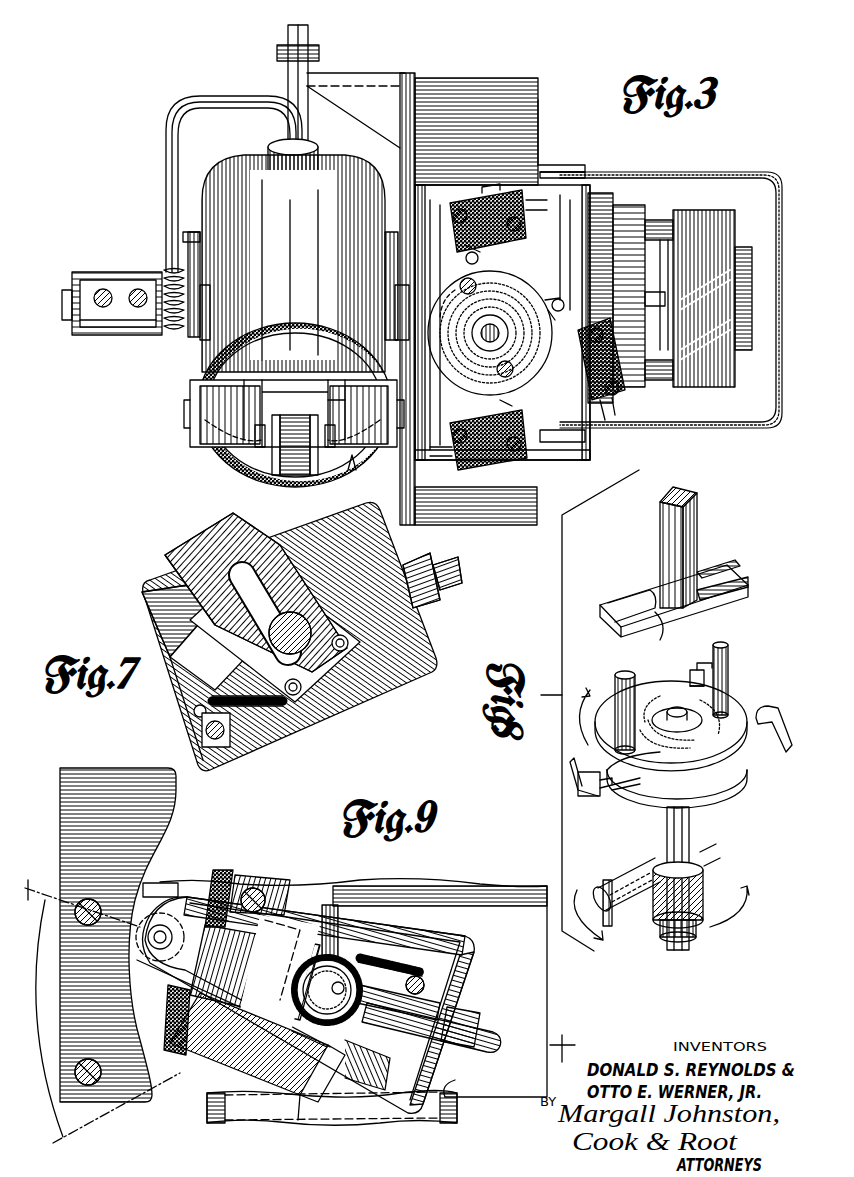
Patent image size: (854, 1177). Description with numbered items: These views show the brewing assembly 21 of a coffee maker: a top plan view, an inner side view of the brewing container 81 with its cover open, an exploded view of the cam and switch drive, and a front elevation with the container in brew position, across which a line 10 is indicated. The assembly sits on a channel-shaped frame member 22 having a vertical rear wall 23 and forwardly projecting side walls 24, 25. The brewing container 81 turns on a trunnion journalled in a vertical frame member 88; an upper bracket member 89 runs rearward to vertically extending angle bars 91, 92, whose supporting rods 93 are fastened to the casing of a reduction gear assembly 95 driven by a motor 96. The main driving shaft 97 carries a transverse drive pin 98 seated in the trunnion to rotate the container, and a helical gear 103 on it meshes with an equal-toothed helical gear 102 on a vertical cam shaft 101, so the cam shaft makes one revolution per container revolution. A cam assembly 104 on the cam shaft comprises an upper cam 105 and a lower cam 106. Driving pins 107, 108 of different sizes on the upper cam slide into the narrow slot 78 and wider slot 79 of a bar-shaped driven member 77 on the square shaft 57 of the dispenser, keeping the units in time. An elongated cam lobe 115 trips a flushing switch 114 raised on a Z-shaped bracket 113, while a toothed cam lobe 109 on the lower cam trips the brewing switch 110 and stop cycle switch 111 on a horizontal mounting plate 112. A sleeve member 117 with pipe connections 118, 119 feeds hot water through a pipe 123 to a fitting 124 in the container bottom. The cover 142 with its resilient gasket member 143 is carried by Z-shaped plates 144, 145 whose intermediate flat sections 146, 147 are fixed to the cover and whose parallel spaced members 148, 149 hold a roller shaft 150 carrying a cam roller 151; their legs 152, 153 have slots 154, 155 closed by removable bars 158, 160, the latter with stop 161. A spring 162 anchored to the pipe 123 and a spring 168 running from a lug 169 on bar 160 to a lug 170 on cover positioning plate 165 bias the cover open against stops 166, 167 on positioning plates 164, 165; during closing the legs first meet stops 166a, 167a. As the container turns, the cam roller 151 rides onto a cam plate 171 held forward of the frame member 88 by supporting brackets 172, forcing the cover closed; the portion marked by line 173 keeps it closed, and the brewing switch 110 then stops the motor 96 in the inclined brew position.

In FIG. 9, the axis line 10 is at (302, 1000).
In FIG. 3, the brewing assembly 21 is at (149, 193).
In FIG. 9, the brewing assembly 21 is at (459, 863).
In FIG. 3, the channel-shaped frame member 22 is at (772, 428).
In FIG. 9, the channel-shaped frame member 22 is at (232, 1126).
In FIG. 3, the vertical rear wall 23 is at (785, 192).
In FIG. 9, the vertical rear wall 23 is at (370, 1115).
In FIG. 3, the side wall 24 is at (675, 172).
In FIG. 9, the side wall 24 is at (210, 1115).
In FIG. 3, the side wall 25 is at (688, 425).
In FIG. 9, the side wall 25 is at (450, 1118).
In FIG. 7, the shaft 57 is at (276, 612).
In FIG. 8, the shaft 57 is at (695, 530).
In FIG. 8, the driven member 77 is at (667, 633).
In FIG. 8, the slot 78 is at (735, 585).
In FIG. 8, the slot 79 is at (603, 620).
In FIG. 7, the brewing container 81 is at (400, 700).
In FIG. 9, the brewing container 81 is at (450, 924).
In FIG. 3, the vertical frame member 88 is at (405, 483).
In FIG. 9, the vertical frame member 88 is at (505, 886).
In FIG. 3, the upper bracket member 89 is at (495, 88).
In FIG. 3, the angle bar 91 is at (548, 126).
In FIG. 3, the angle bar 92 is at (538, 465).
In FIG. 3, the upper supporting rod 93 is at (560, 160).
In FIG. 3, the reduction gear assembly 95 is at (632, 205).
In FIG. 3, the motor 96 is at (725, 212).
In FIG. 8, the main driving shaft 97 is at (715, 858).
In FIG. 8, the drive pin 98 is at (608, 880).
In FIG. 3, the cam shaft 101 is at (492, 330).
In FIG. 8, the cam shaft 101 is at (698, 834).
In FIG. 8, the helical gear 102 is at (700, 890).
In FIG. 8, the helical gear 103 is at (650, 895).
In FIG. 3, the cam assembly 104 is at (540, 270).
In FIG. 8, the cam assembly 104 is at (760, 778).
In FIG. 3, the upper cam 105 is at (465, 380).
In FIG. 8, the upper cam 105 is at (730, 702).
In FIG. 8, the lower cam 106 is at (740, 785).
In FIG. 3, the driving pin 107 is at (508, 350).
In FIG. 8, the driving pin 107 is at (730, 662).
In FIG. 3, the driving pin 108 is at (469, 293).
In FIG. 8, the driving pin 108 is at (620, 676).
In FIG. 3, the cam lobe 109 is at (498, 262).
In FIG. 8, the cam lobe 109 is at (622, 792).
In FIG. 3, the brewing switch 110 is at (515, 458).
In FIG. 8, the brewing switch 110 is at (772, 708).
In FIG. 3, the stop cycle switch 111 is at (504, 204).
In FIG. 8, the stop cycle switch 111 is at (586, 798).
In FIG. 3, the mounting plate 112 is at (448, 190).
In FIG. 3, the Z-shaped bracket 113 is at (550, 306).
In FIG. 3, the flushing switch 114 is at (590, 355).
In FIG. 8, the flushing switch 114 is at (690, 676).
In FIG. 3, the elongated cam lobe 115 is at (545, 292).
In FIG. 8, the elongated cam lobe 115 is at (602, 778).
In FIG. 3, the sleeve member 117 is at (120, 330).
In FIG. 3, the pipe connection 118 is at (98, 283).
In FIG. 9, the pipe connection 118 is at (330, 905).
In FIG. 3, the pipe connection 119 is at (138, 283).
In FIG. 3, the pipe 123 is at (218, 98).
In FIG. 7, the pipe 123 is at (460, 580).
In FIG. 9, the pipe 123 is at (498, 1036).
In FIG. 3, the fitting 124 is at (272, 148).
In FIG. 7, the fitting 124 is at (432, 566).
In FIG. 9, the fitting 124 is at (490, 1013).
In FIG. 3, the cover 142 is at (286, 326).
In FIG. 9, the cover 142 is at (175, 1020).
In FIG. 3, the resilient gasket member 143 is at (320, 330).
In FIG. 9, the resilient gasket member 143 is at (228, 845).
In FIG. 3, the Z-shaped plate 144 is at (181, 427).
In FIG. 9, the Z-shaped plate 144 is at (298, 890).
In FIG. 3, the Z-shaped plate 145 is at (352, 470).
In FIG. 3, the intermediate flat section 146 is at (244, 380).
In FIG. 3, the intermediate flat section 147 is at (345, 382).
In FIG. 3, the parallel spaced member 148 is at (285, 470).
In FIG. 9, the parallel spaced member 148 is at (190, 894).
In FIG. 3, the parallel spaced member 149 is at (328, 403).
In FIG. 3, the roller shaft 150 is at (262, 447).
In FIG. 9, the roller shaft 150 is at (165, 960).
In FIG. 3, the cam roller 151 is at (296, 415).
In FIG. 9, the cam roller 151 is at (138, 937).
In FIG. 3, the leg 152 is at (195, 262).
In FIG. 9, the leg 152 is at (262, 930).
In FIG. 3, the leg 153 is at (388, 262).
In FIG. 7, the leg 153 is at (336, 606).
In FIG. 9, the slot 154 is at (406, 964).
In FIG. 7, the slot 155 is at (305, 592).
In FIG. 3, the removable bar 158 is at (188, 236).
In FIG. 9, the removable bar 158 is at (418, 1002).
In FIG. 7, the removable bar 160 is at (350, 650).
In FIG. 7, the stop 161 is at (334, 617).
In FIG. 3, the spring 162 is at (175, 333).
In FIG. 9, the spring 162 is at (385, 955).
In FIG. 9, the cover positioning plate 164 is at (280, 1060).
In FIG. 7, the cover positioning plate 165 is at (182, 638).
In FIG. 3, the stop 166 is at (192, 293).
In FIG. 9, the stop 166 is at (300, 1110).
In FIG. 9, the stop 166a is at (256, 872).
In FIG. 3, the stop 167 is at (386, 295).
In FIG. 7, the stop 167 is at (279, 545).
In FIG. 7, the stop 167a is at (204, 732).
In FIG. 7, the spring 168 is at (262, 710).
In FIG. 7, the lug 169 is at (296, 720).
In FIG. 7, the lug 170 is at (194, 712).
In FIG. 3, the cam plate 171 is at (287, 32).
In FIG. 9, the cam plate 171 is at (76, 770).
In FIG. 3, the supporting brackets 172 is at (380, 85).
In FIG. 9, the line 173 is at (42, 1085).